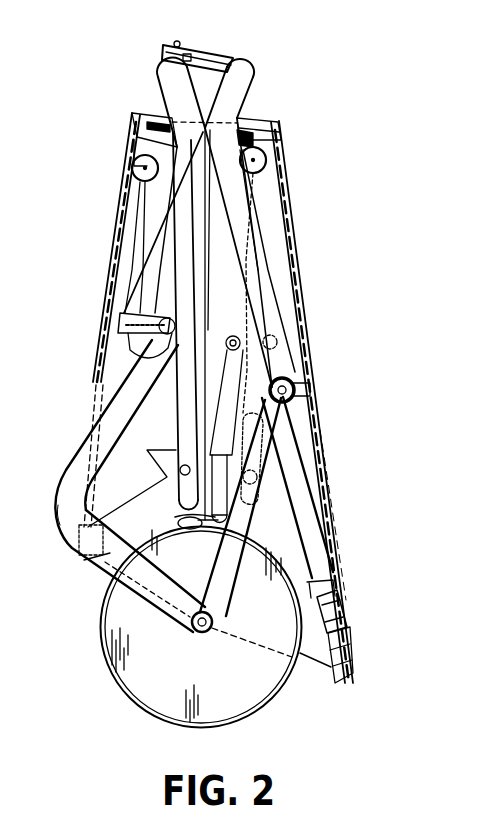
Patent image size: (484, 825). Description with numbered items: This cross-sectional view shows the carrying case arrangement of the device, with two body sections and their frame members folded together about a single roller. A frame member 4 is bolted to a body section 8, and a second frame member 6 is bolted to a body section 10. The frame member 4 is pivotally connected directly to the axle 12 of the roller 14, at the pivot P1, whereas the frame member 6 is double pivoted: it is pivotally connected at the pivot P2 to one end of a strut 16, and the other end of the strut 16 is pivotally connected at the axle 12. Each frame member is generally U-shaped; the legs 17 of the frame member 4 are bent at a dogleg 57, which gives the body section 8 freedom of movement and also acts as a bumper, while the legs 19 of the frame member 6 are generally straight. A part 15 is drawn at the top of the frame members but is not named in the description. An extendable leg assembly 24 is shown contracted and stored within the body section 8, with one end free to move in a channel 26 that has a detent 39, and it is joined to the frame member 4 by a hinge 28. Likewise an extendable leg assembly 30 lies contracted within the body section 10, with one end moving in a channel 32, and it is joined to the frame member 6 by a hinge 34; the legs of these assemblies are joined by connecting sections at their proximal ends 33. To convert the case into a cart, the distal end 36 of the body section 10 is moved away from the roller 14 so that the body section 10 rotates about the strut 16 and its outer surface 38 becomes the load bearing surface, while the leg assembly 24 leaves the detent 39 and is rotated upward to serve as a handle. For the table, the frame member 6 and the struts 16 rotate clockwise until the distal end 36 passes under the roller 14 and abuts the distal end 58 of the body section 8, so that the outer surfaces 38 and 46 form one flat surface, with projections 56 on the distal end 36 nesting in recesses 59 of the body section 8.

The frame member 4 is at (158, 78).
The frame member 6 is at (249, 82).
The body section 8 is at (120, 250).
The body section 10 is at (300, 281).
The axle 12 is at (227, 620).
The roller 14 is at (248, 719).
The handlebar 15 is at (162, 45).
The strut 16 is at (247, 518).
The legs 17 is at (108, 436).
The legs 19 is at (297, 445).
The extendable leg assembly 24 is at (146, 226).
The channel 26 is at (128, 312).
The hinge 28 is at (147, 450).
The extendable leg assembly 30 is at (266, 202).
The channel 32 is at (265, 262).
The proximal ends 33 is at (184, 514).
The hinge 34 is at (285, 362).
The distal end 36 is at (353, 683).
The outer surface 38 is at (330, 463).
The detent 39 is at (132, 154).
The outer surface 46 is at (104, 376).
The projections 56 is at (338, 688).
The dogleg 57 is at (60, 505).
The distal end 58 is at (76, 556).
The recesses 59 is at (84, 562).
The wheel pivot P1 is at (198, 636).
The upper pivot P2 is at (305, 412).